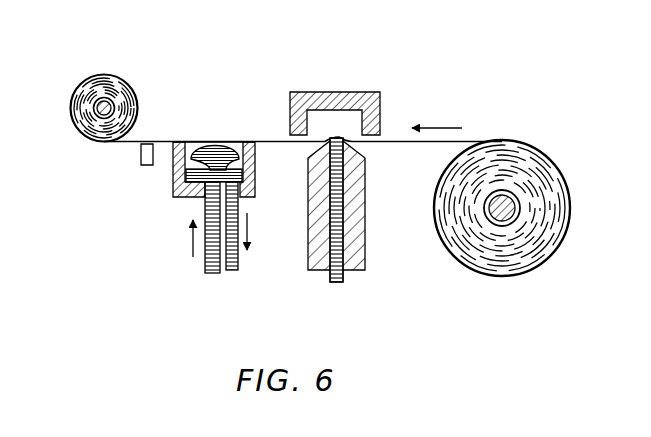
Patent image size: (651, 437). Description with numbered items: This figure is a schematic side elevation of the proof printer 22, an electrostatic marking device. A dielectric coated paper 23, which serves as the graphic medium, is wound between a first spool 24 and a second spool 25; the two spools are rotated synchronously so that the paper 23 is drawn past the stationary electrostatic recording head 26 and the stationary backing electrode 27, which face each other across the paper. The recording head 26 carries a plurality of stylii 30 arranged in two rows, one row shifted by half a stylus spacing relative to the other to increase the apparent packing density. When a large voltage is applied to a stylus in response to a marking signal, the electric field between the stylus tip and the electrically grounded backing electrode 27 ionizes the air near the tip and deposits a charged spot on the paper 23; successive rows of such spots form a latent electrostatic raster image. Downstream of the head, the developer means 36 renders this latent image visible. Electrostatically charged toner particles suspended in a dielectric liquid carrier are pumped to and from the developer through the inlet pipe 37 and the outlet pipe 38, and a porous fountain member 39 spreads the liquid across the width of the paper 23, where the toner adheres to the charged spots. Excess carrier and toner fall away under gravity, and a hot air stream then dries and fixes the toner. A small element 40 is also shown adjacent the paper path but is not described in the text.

The proof printer 22 is at (484, 109).
The dielectric coated paper 23 is at (154, 140).
The spool 24 is at (111, 100).
The spool 25 is at (486, 217).
The electrostatic recording head 26 is at (314, 230).
The backing electrode 27 is at (377, 93).
The stylii 30 is at (344, 190).
The developer means 36 is at (170, 205).
The inlet pipe 37 is at (206, 268).
The outlet pipe 38 is at (238, 268).
The porous fountain member 39 is at (223, 141).
The guide block 40 is at (150, 167).